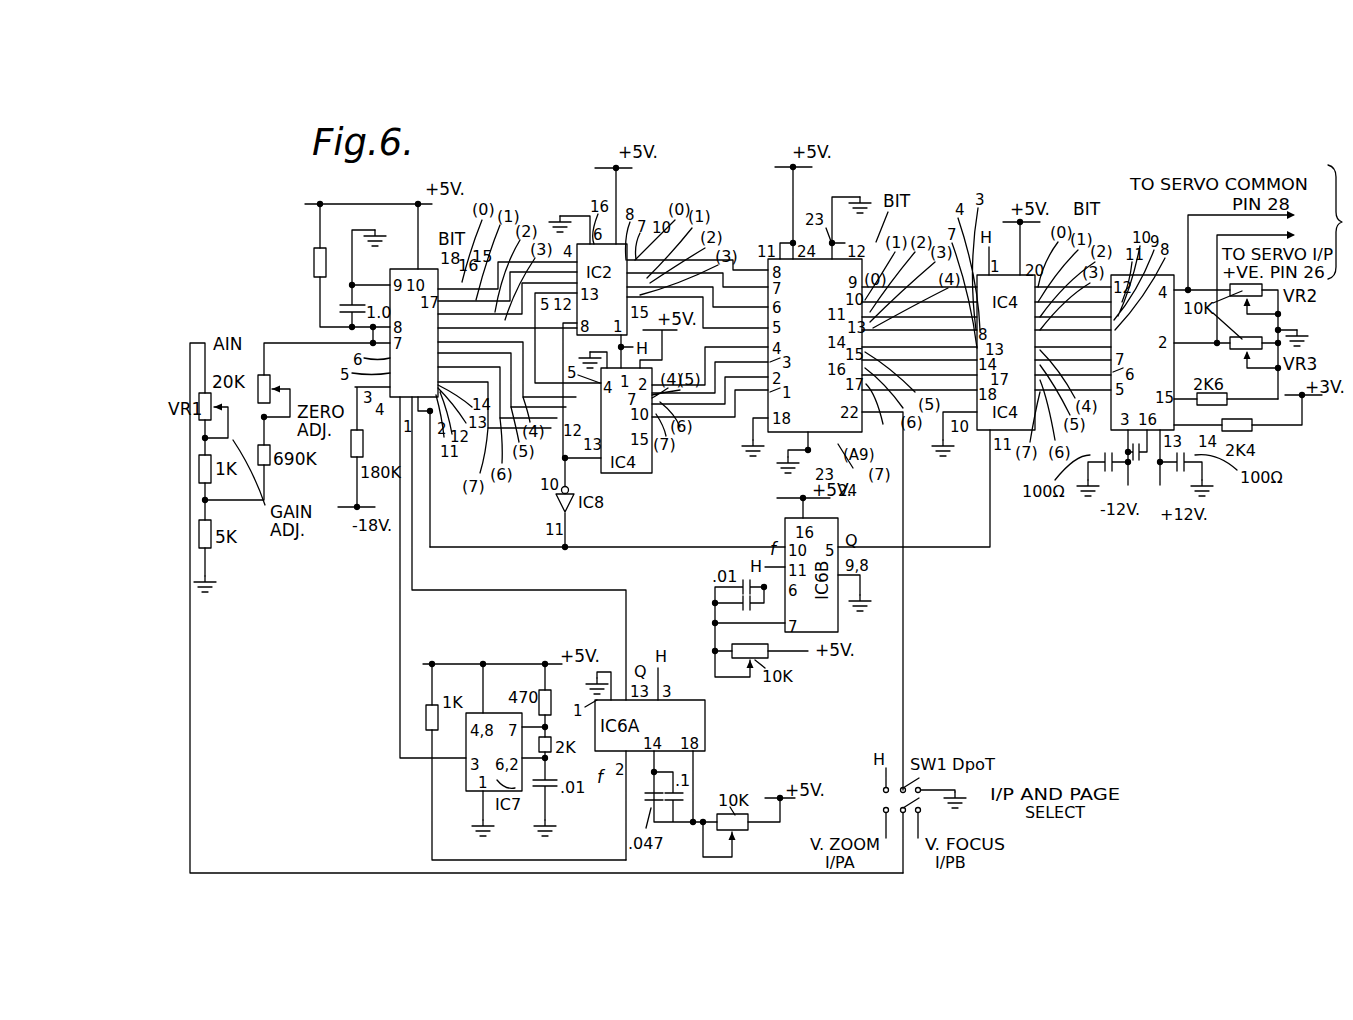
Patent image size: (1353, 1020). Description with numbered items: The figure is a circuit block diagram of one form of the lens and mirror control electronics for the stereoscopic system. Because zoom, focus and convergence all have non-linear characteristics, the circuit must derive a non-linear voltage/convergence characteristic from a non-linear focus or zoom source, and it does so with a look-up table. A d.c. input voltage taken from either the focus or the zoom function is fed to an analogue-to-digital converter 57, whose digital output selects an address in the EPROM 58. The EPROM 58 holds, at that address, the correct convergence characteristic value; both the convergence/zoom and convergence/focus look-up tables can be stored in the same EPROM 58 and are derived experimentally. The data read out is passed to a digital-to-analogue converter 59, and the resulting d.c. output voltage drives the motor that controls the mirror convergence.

The analogue-to-digital converter 57 is at (397, 269).
The EPROM 58 is at (765, 260).
The digital-to-analogue converter 59 is at (1152, 370).